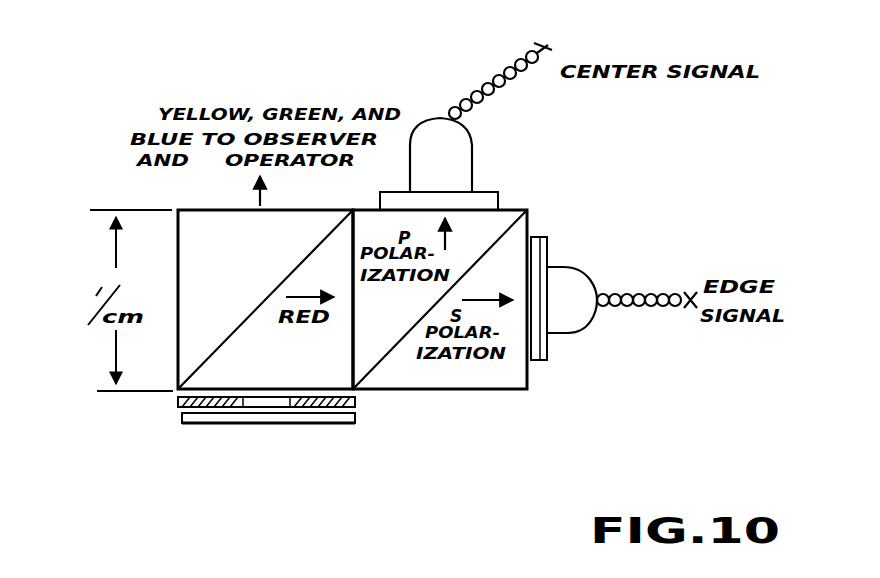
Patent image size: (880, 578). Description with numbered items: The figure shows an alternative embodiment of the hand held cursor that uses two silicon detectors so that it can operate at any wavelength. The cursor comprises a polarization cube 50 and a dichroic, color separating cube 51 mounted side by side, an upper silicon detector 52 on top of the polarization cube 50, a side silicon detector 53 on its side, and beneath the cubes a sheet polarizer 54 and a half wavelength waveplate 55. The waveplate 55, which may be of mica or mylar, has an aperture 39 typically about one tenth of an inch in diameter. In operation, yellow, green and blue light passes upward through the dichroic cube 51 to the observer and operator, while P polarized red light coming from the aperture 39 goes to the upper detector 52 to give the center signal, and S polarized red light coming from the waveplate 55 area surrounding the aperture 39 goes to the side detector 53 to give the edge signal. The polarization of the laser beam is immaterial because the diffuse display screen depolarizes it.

The aperture 39 is at (298, 390).
The polarization cube 50 is at (478, 390).
The dichroic cube 51 is at (195, 209).
The silicon detector 52 is at (475, 152).
The silicon detector 53 is at (583, 273).
The sheet polarizer 54 is at (182, 417).
The half wavelength waveplate 55 is at (178, 400).